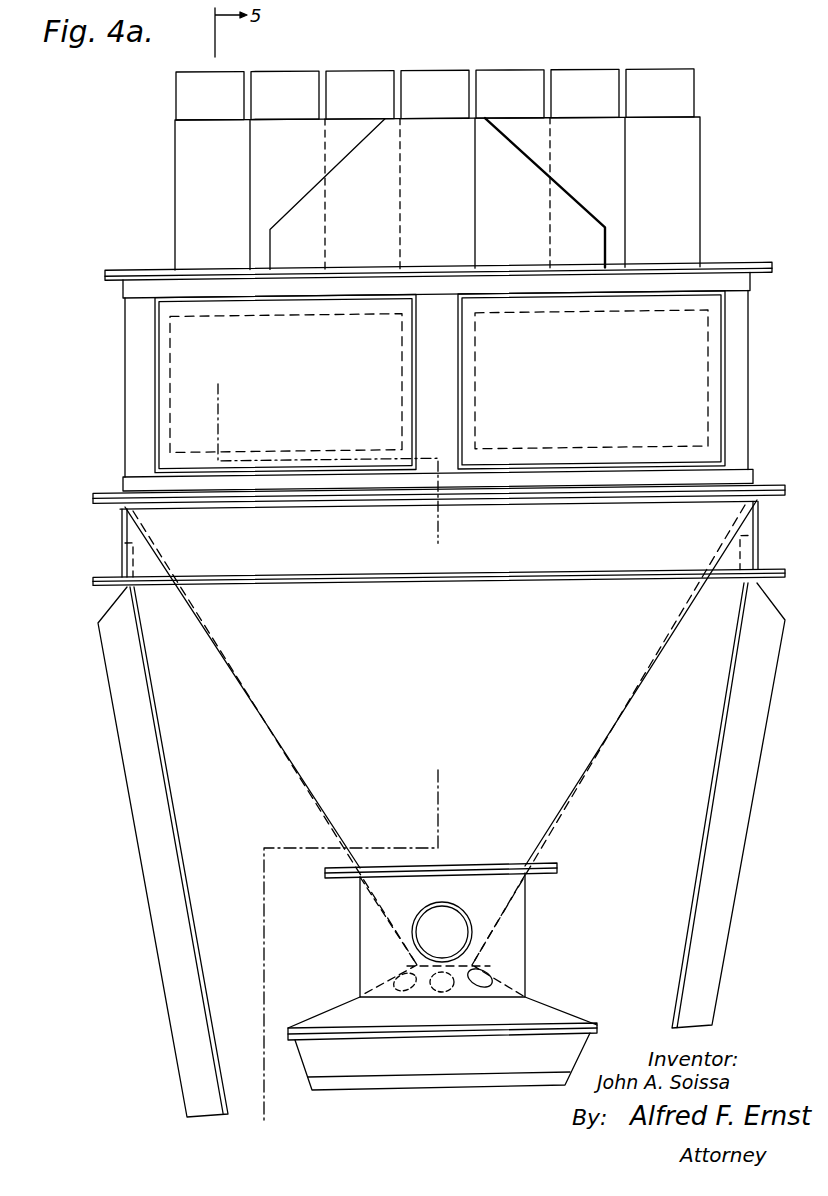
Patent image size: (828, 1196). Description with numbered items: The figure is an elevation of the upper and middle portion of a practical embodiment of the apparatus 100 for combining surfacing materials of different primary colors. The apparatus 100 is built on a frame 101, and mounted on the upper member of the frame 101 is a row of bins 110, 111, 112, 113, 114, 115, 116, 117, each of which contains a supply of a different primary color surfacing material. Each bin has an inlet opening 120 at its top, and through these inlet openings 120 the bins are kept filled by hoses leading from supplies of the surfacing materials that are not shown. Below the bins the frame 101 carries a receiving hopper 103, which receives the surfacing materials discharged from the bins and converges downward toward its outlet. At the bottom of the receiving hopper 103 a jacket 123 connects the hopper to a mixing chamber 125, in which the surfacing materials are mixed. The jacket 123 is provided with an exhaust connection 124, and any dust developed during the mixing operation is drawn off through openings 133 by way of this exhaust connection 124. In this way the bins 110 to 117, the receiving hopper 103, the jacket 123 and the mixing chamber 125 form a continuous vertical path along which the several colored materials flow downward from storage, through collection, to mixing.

The apparatus 100 is at (176, 1052).
The frame 101 is at (153, 566).
The receiving hopper 103 is at (558, 823).
The bin 110 is at (212, 125).
The bin 111 is at (290, 125).
The bin 112 is at (383, 120).
The bin 113 is at (430, 125).
The bin 114 is at (515, 125).
The bin 115 is at (580, 125).
The bin 116 is at (658, 125).
The bin 117 is at (535, 198).
The inlet opening 120 is at (185, 93).
The jacket 123 is at (358, 972).
The exhaust connection 124 is at (475, 898).
The mixing chamber 125 is at (590, 1040).
The openings 133 is at (487, 975).